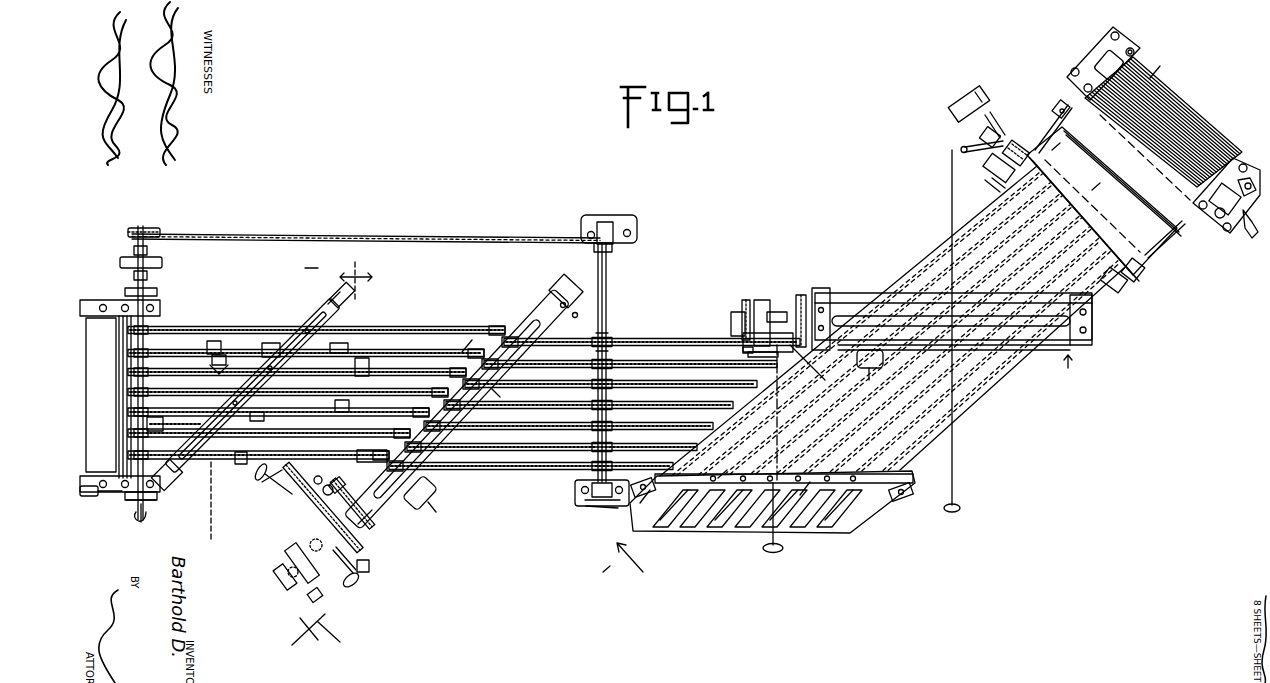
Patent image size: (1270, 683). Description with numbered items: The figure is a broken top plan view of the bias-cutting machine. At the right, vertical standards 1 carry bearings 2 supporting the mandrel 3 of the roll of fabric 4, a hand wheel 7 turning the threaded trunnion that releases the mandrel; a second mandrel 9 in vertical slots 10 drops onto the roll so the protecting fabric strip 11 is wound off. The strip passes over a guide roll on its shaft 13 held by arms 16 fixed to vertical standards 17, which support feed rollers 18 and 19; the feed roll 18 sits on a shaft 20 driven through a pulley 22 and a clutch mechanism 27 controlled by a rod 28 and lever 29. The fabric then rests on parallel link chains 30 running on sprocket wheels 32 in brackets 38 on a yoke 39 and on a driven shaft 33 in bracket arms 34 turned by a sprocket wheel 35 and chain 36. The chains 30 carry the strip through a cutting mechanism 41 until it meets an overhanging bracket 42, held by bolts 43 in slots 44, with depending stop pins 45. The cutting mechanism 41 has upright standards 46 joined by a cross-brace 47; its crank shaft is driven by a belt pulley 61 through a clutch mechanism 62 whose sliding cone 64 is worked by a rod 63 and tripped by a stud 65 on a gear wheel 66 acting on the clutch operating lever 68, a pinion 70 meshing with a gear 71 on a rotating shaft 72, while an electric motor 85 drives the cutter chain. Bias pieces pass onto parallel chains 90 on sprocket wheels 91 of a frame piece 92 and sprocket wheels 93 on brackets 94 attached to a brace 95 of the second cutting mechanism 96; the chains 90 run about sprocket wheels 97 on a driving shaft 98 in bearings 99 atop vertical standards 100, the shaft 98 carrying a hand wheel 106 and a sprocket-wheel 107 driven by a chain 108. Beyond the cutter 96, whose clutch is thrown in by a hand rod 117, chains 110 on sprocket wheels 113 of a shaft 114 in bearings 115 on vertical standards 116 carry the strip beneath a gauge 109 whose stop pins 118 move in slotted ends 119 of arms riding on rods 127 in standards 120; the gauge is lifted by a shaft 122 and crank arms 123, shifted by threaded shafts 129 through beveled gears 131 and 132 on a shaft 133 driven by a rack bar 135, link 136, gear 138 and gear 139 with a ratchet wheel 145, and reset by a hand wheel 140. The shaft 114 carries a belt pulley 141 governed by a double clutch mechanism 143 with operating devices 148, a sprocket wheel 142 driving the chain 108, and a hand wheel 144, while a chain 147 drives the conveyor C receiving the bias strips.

The vertical standards 1 is at (1088, 42).
The bearings 2 is at (1246, 200).
The mandrel 3 is at (1180, 52).
The roll of fabric 4 is at (1192, 82).
The hand wheel 7 is at (1254, 238).
The mandrel 9 is at (1100, 58).
The vertical slots 10 is at (1130, 46).
The protecting fabric strip 11 is at (1170, 78).
The shaft 13 is at (1160, 250).
The arms 16 is at (1053, 108).
The vertical standards 17 is at (1130, 296).
The feed roll 18 is at (1057, 98).
The upper feed roll 19 is at (1090, 215).
The shaft 20 is at (952, 98).
The pulley 22 is at (976, 92).
The clutch mechanism 27 is at (996, 115).
The rod 28 is at (1025, 365).
The lever 29 is at (980, 136).
The parallel link chains 30 is at (945, 250).
The sprocket wheels 32 is at (690, 520).
The driven shaft 33 is at (987, 189).
The bracket arms 34 is at (985, 168).
The sprocket wheel 35 is at (962, 150).
The chain 36 is at (1015, 144).
The brackets 38 is at (640, 516).
The yoke 39 is at (745, 535).
The cutting mechanism 41 is at (1071, 369).
The overhanging bracket 42 is at (816, 478).
The bolts 43 is at (655, 486).
The slots 44 is at (632, 495).
The stop pins 45 is at (745, 477).
The upright standards 46 is at (562, 286).
The cross-brace 47 is at (540, 318).
The belt pulley 61 is at (294, 556).
The clutch mechanism 62 is at (780, 312).
The rod 63 is at (772, 553).
The sliding cone 64 is at (312, 540).
The stud 65 is at (312, 510).
The gear wheel 66 is at (370, 568).
The clutch operating lever 68 is at (763, 352).
The pinion 70 is at (278, 578).
The gear 71 is at (308, 598).
The rotating shaft 72 is at (339, 571).
The electric motor 85 is at (428, 508).
The parallel chains 90 is at (658, 340).
The sprocket wheels 91 is at (700, 412).
The frame piece 92 is at (730, 418).
The sprocket wheels 93 is at (612, 341).
The brackets 94 is at (612, 337).
The brace 95 is at (732, 466).
The second cutting mechanism 96 is at (478, 340).
The sprocket wheels 97 is at (499, 397).
The driving shaft 98 is at (608, 290).
The bearings 99 is at (604, 222).
The vertical standards 100 is at (636, 218).
The hand wheel 106 is at (582, 508).
The sprocket-wheel 107 is at (612, 250).
The chain 108 is at (425, 227).
The gauge 109 is at (328, 306).
The chains 110 is at (214, 341).
The sprocket wheels 113 is at (150, 331).
The shaft 114 is at (140, 384).
The bearings 115 is at (157, 292).
The vertical standards 116 is at (102, 300).
The hand rod 117 is at (360, 588).
The stop pins 118 is at (178, 466).
The slotted ends 119 is at (352, 300).
The standards 120 is at (236, 370).
The shaft 122 is at (310, 322).
The crank arms 123 is at (338, 300).
The rods 127 is at (240, 464).
The threaded shafts 129 is at (165, 420).
The beveled gears 131 is at (350, 349).
The beveled gears 132 is at (368, 375).
The shaft 133 is at (338, 412).
The reciprocating rack bar 135 is at (268, 482).
The link 136 is at (323, 479).
The gear 138 is at (348, 477).
The gear 139 is at (375, 515).
The hand wheel 140 is at (262, 482).
The belt pulley 141 is at (122, 258).
The sprocket wheel 142 is at (148, 228).
The double clutch mechanism 143 is at (148, 276).
The hand wheel 144 is at (146, 522).
The ratchet wheel 145 is at (140, 373).
The chain 147 is at (105, 318).
The operating devices 148 is at (101, 496).